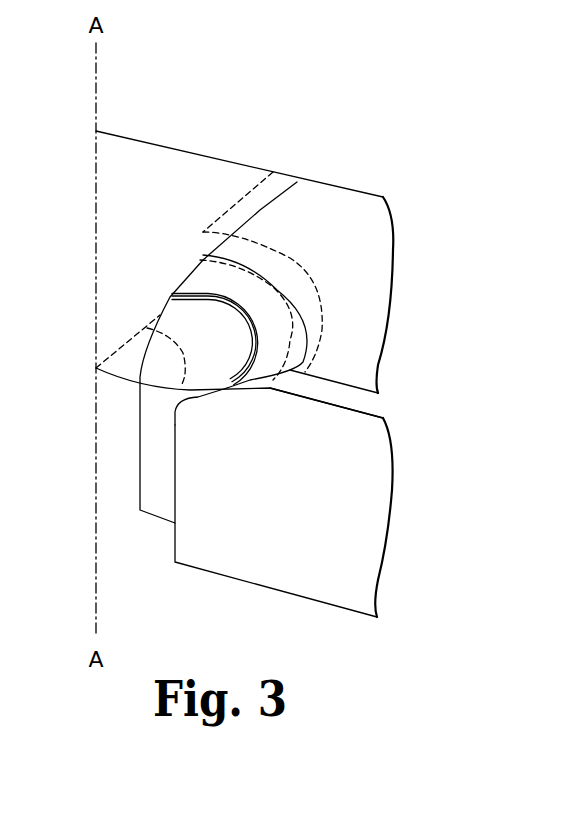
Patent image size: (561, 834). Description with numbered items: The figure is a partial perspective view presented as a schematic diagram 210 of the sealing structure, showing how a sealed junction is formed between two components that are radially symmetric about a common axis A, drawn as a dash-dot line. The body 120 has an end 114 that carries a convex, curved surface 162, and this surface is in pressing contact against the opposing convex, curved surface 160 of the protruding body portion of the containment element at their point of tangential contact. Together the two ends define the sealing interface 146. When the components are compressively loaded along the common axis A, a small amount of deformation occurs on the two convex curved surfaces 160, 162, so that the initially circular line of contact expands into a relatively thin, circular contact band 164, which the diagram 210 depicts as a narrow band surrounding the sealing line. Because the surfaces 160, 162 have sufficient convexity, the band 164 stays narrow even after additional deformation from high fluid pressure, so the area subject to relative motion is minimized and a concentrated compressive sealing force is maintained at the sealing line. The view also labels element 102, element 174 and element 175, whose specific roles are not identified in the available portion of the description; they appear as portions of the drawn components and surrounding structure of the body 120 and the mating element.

The diagram 210 is at (326, 104).
The bent tongue 102 is at (203, 232).
The sealing interface 146 is at (242, 197).
The contact band 164 is at (206, 294).
The convex curved surface 160 is at (172, 310).
The hidden section contour 174 is at (153, 472).
The convex curved surface 162 is at (196, 404).
The body 120 is at (298, 529).
The side edge 175 is at (350, 407).
The end 114 is at (370, 414).